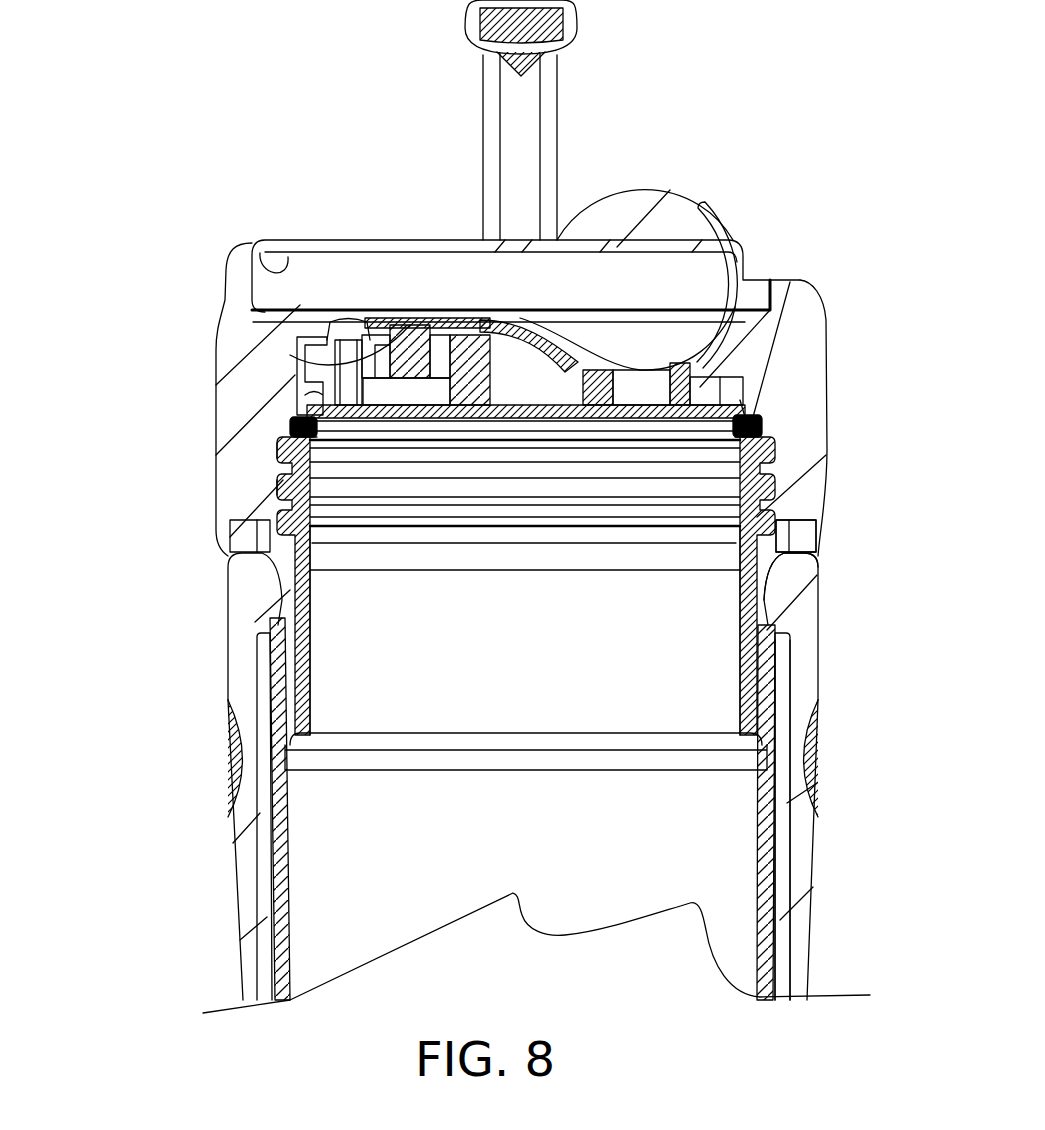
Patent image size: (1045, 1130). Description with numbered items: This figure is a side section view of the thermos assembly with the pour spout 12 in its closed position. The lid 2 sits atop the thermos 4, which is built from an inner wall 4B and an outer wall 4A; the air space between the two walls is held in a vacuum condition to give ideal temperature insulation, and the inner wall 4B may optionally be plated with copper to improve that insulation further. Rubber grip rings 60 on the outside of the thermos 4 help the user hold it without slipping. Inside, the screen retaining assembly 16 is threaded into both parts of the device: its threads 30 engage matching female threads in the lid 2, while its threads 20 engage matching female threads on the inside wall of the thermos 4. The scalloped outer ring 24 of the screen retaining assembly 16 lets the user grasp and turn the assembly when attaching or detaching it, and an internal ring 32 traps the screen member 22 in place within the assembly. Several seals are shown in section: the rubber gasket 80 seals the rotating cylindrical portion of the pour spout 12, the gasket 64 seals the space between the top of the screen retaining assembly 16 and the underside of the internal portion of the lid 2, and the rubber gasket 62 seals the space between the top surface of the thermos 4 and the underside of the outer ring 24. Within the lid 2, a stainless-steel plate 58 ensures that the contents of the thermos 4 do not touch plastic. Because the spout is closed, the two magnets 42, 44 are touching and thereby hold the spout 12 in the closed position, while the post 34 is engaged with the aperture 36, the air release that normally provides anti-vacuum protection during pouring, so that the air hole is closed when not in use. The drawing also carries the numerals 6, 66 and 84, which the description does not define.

The lid 2 is at (817, 397).
The thermos 4 is at (200, 820).
The outer wall 4A is at (807, 870).
The inner wall 4B is at (763, 927).
The handle 6 is at (549, 120).
The pour spout 12 is at (630, 200).
The screen retaining assembly 16 is at (270, 442).
The threads 20 is at (260, 623).
The screen member 22 is at (292, 422).
The outer ring 24 is at (787, 517).
The threads 30 is at (274, 443).
The internal ring 32 is at (287, 497).
The post 34 is at (350, 330).
The aperture 36 is at (320, 340).
The magnet 42 is at (410, 330).
The magnet 44 is at (290, 355).
The stainless-steel plate 58 is at (493, 410).
The rubber grip rings 60 is at (235, 775).
The rubber gasket 62 is at (810, 570).
The gasket 64 is at (700, 387).
The ball 66 is at (730, 235).
The rubber gasket 80 is at (750, 260).
The lip 84 is at (262, 285).